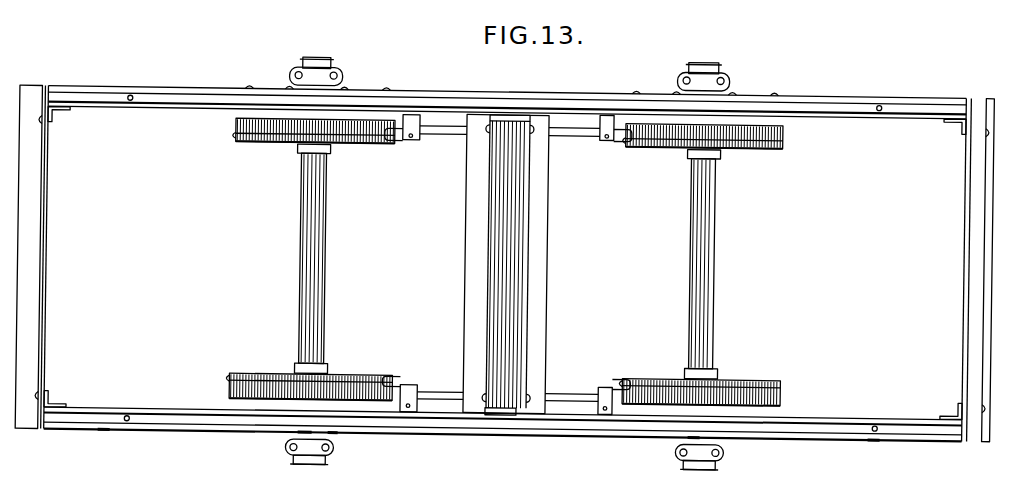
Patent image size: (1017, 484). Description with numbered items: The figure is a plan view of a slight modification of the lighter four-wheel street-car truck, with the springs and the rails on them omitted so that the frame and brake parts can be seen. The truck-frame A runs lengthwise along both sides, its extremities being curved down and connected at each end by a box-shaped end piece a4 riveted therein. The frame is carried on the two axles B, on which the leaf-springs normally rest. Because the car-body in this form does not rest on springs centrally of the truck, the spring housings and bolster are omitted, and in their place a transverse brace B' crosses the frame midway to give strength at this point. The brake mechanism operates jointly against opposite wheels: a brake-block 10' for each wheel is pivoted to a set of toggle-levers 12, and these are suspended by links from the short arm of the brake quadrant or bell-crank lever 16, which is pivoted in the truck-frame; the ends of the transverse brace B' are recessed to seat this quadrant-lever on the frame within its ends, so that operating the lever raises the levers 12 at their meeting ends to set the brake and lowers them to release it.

The frame A is at (505, 262).
The box-shaped end piece a4 is at (504, 263).
The axle B is at (505, 263).
The transverse brace B' is at (523, 264).
The brake quadrant or bell-crank lever 16 is at (498, 113).
The toggle-levers 12 is at (440, 393).
The brake-block 10' is at (507, 263).